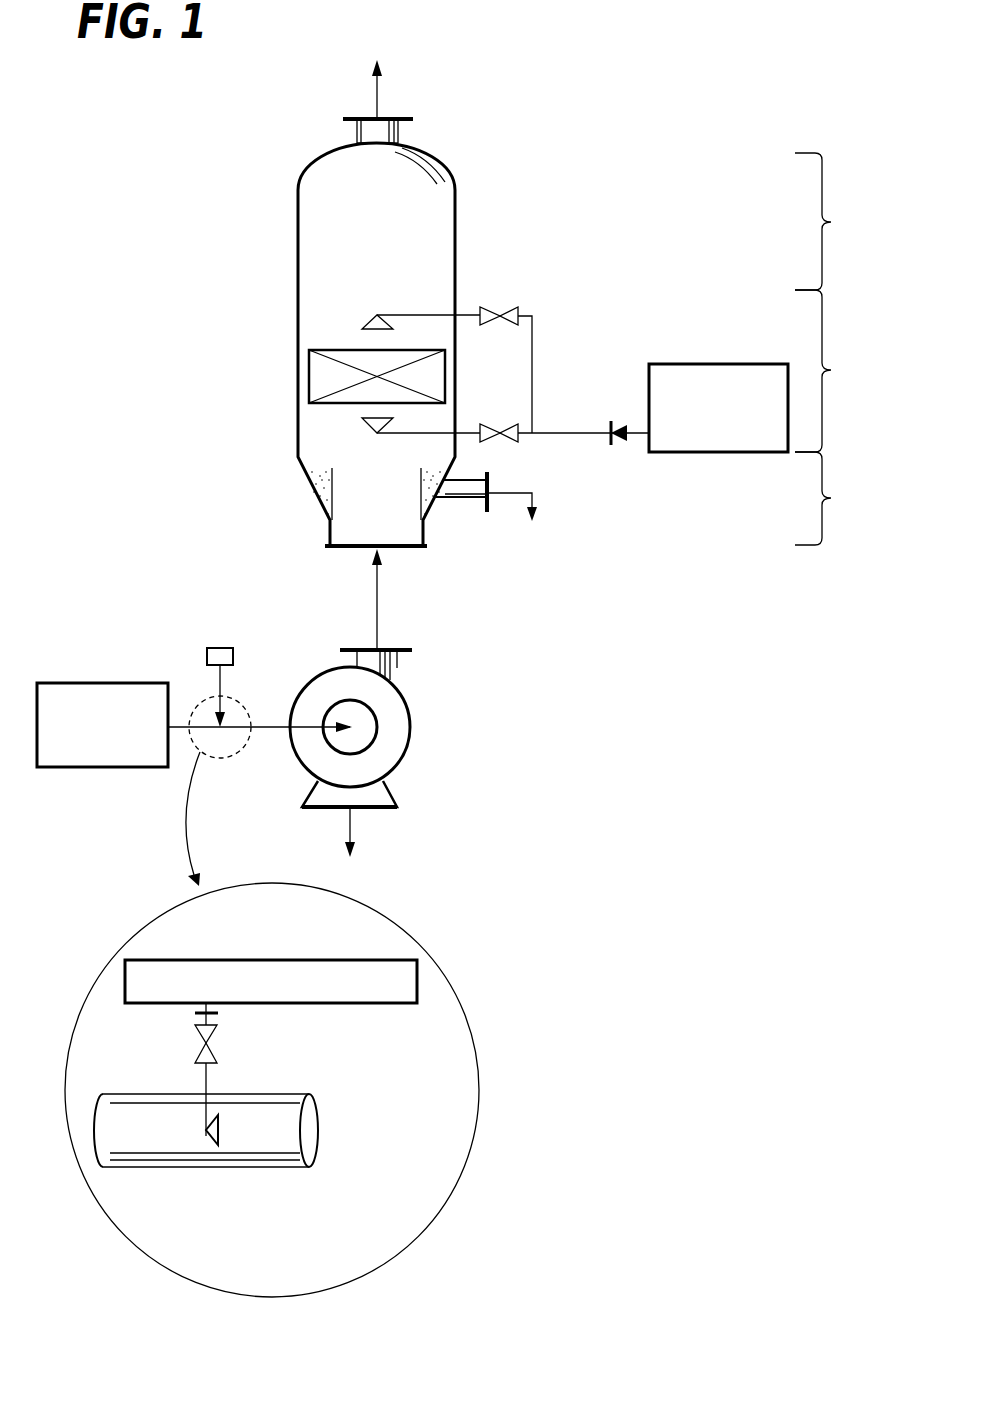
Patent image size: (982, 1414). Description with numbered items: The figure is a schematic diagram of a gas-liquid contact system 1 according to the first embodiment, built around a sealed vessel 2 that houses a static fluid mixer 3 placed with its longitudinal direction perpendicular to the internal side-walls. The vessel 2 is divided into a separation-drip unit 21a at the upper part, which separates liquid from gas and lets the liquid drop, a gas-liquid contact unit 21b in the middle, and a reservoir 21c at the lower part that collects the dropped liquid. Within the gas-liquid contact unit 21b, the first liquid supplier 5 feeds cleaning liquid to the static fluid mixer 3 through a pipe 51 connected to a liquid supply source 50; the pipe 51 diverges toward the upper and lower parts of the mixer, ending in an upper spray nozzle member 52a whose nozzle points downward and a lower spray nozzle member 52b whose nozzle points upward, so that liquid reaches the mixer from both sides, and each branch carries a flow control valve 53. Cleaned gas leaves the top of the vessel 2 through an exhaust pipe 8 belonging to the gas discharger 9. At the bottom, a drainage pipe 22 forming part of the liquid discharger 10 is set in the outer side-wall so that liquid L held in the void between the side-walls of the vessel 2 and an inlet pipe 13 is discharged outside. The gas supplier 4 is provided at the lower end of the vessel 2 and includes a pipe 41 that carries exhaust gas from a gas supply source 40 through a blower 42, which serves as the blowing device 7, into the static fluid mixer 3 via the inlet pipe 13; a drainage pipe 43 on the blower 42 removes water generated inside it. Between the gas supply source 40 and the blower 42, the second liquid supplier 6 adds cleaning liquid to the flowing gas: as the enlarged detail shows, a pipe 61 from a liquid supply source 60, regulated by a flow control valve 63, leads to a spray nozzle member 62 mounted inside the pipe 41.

The gas-liquid contact system 1 is at (516, 88).
The vessel 2 is at (456, 203).
The static fluid mixer 3 is at (309, 366).
The gas supplier 4 is at (302, 600).
The first liquid supplier 5 is at (547, 380).
The second liquid supplier 6 is at (172, 660).
The blowing device 7 is at (497, 716).
The exhaust pipe 8 is at (401, 130).
The gas discharger 9 is at (303, 110).
The liquid discharger 10 is at (594, 558).
The inlet pipe 13 is at (430, 548).
The separation-drip unit 21a is at (840, 221).
The gas-liquid contact unit 21b is at (841, 371).
The reservoir 21c is at (840, 498).
The drainage pipe 22 is at (508, 492).
The gas supply source 40 is at (82, 682).
The pipe 41 is at (377, 628).
The blower 42 is at (390, 745).
The drainage pipe 43 is at (352, 820).
The liquid supply source 50 is at (725, 452).
The pipe 51 is at (553, 434).
The upper spray nozzle member 52a is at (362, 323).
The lower spray nozzle member 52b is at (362, 427).
The flow control valve 53 is at (505, 307).
The liquid supply source 60 is at (220, 648).
The pipe 61 is at (222, 678).
The spray nozzle member 62 is at (205, 1160).
The flow control valve 63 is at (212, 1040).
The liquid L is at (312, 487).